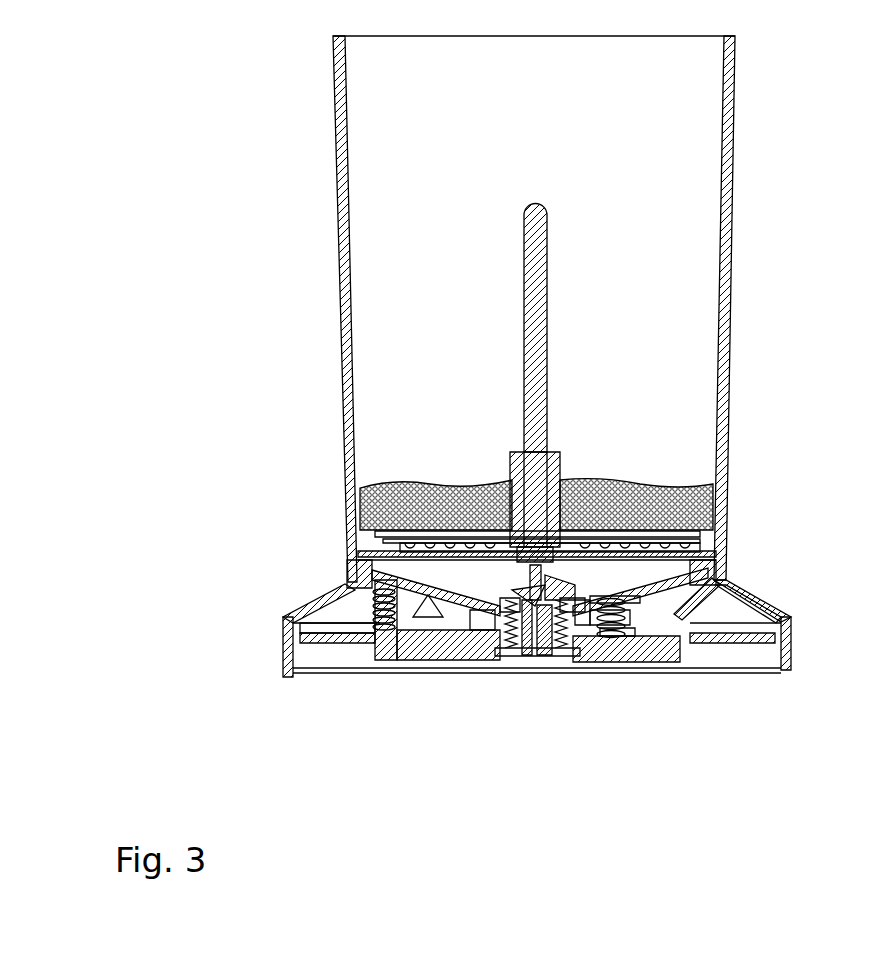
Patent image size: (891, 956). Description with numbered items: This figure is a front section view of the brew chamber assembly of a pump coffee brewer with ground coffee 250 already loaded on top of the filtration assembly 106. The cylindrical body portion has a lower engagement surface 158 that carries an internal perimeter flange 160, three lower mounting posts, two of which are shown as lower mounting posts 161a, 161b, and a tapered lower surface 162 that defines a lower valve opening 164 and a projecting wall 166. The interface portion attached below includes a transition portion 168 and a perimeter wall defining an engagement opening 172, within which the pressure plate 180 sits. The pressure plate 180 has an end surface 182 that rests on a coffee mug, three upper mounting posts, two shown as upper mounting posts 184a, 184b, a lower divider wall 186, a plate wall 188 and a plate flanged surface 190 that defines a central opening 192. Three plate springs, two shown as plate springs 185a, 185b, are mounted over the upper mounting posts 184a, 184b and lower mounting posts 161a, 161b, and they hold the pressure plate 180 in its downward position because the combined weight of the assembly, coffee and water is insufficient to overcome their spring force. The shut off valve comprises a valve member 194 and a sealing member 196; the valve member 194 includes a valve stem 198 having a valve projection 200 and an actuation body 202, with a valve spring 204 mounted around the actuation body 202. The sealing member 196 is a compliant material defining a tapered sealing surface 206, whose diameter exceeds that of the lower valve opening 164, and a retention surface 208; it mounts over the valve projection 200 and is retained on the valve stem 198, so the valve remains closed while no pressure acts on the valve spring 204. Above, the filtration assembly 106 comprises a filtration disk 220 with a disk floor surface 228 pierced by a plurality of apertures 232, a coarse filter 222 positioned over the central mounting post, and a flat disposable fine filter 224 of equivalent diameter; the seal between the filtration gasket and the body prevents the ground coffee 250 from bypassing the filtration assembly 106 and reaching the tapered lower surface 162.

The filtration assembly 106 is at (553, 300).
The lower engagement surface 158 is at (397, 665).
The internal perimeter flange 160 is at (395, 556).
The lower mounting post 161a is at (372, 575).
The lower mounting post 161b is at (702, 576).
The tapered lower surface 162 is at (656, 556).
The lower valve opening 164 is at (600, 604).
The projecting wall 166 is at (620, 662).
The transition portion 168 is at (760, 598).
The engagement opening 172 is at (788, 672).
The pressure plate 180 is at (424, 662).
The end surface 182 is at (302, 640).
The upper mounting post 184a is at (372, 602).
The upper mounting post 184b is at (620, 636).
The plate spring 185a is at (350, 645).
The plate spring 185b is at (745, 648).
The lower divider wall 186 is at (378, 663).
The plate wall 188 is at (480, 662).
The plate flanged surface 190 is at (520, 660).
The central opening 192 is at (542, 652).
The valve member 194 is at (600, 622).
The sealing member 196 is at (506, 650).
The valve stem 198 is at (586, 528).
The valve projection 200 is at (548, 560).
The actuation body 202 is at (558, 652).
The valve spring 204 is at (577, 642).
The tapered sealing surface 206 is at (495, 656).
The retention surface 208 is at (470, 533).
The filtration disk 220 is at (553, 380).
The coarse filter 222 is at (562, 462).
The fine filter 224 is at (622, 546).
The disk floor surface 228 is at (530, 592).
The apertures 232 is at (576, 600).
The ground coffee 250 is at (390, 493).